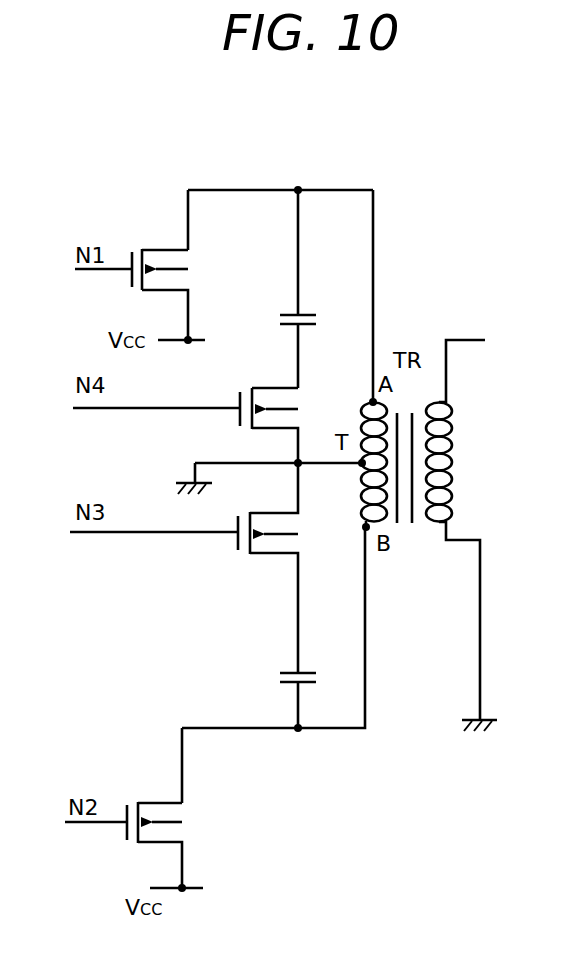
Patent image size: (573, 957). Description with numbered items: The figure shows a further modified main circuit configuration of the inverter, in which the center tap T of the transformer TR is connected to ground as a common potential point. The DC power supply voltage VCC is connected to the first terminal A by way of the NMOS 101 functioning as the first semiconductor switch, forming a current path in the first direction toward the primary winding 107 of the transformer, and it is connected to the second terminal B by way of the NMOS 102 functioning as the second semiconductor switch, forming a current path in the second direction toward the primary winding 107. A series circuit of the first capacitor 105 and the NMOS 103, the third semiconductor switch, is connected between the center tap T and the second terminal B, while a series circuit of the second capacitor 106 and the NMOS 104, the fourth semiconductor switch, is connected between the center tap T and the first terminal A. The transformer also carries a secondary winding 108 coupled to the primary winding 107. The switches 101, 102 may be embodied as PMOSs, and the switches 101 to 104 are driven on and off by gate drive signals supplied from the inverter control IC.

The NMOS (first semiconductor switch) 101 is at (142, 250).
The NMOS (second semiconductor switch) 102 is at (130, 801).
The NMOS (third semiconductor switch) 103 is at (242, 556).
The NMOS (fourth semiconductor switch) 104 is at (244, 388).
The first capacitor 105 is at (280, 675).
The second capacitor 106 is at (284, 313).
The primary winding 107 is at (361, 478).
The secondary winding 108 is at (452, 458).